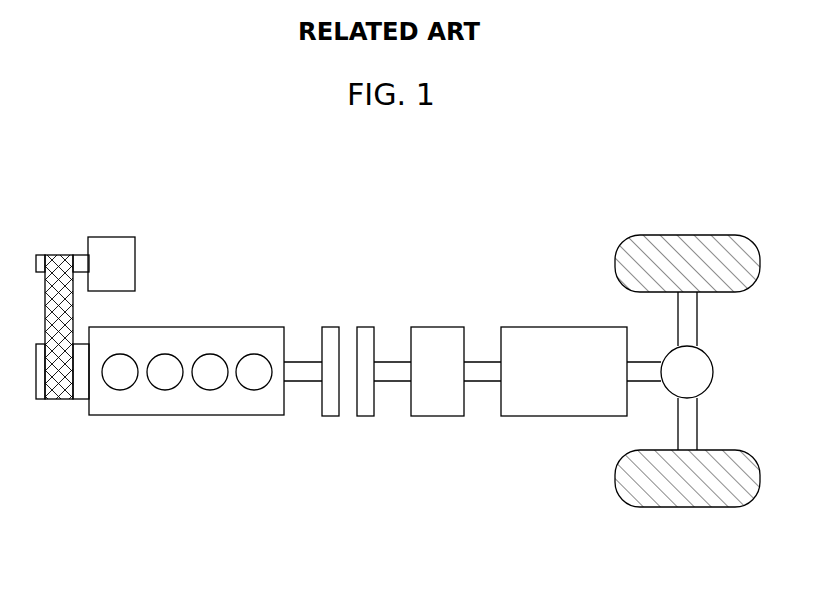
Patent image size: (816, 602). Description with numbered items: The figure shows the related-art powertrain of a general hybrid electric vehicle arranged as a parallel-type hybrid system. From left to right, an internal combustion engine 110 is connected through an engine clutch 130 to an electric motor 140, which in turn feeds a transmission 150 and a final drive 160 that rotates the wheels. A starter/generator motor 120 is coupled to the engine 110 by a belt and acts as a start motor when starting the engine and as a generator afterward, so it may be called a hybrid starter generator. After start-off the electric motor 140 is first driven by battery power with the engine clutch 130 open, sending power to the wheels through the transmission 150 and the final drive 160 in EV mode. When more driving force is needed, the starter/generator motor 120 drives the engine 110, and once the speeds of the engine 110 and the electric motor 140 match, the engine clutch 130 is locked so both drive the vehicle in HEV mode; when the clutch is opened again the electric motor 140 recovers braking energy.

The internal combustion engine 110 is at (248, 324).
The starter/generator motor 120 is at (137, 247).
The engine clutch 130 is at (368, 323).
The electric motor 140 is at (443, 323).
The transmission 150 is at (588, 325).
The final drive 160 is at (713, 352).